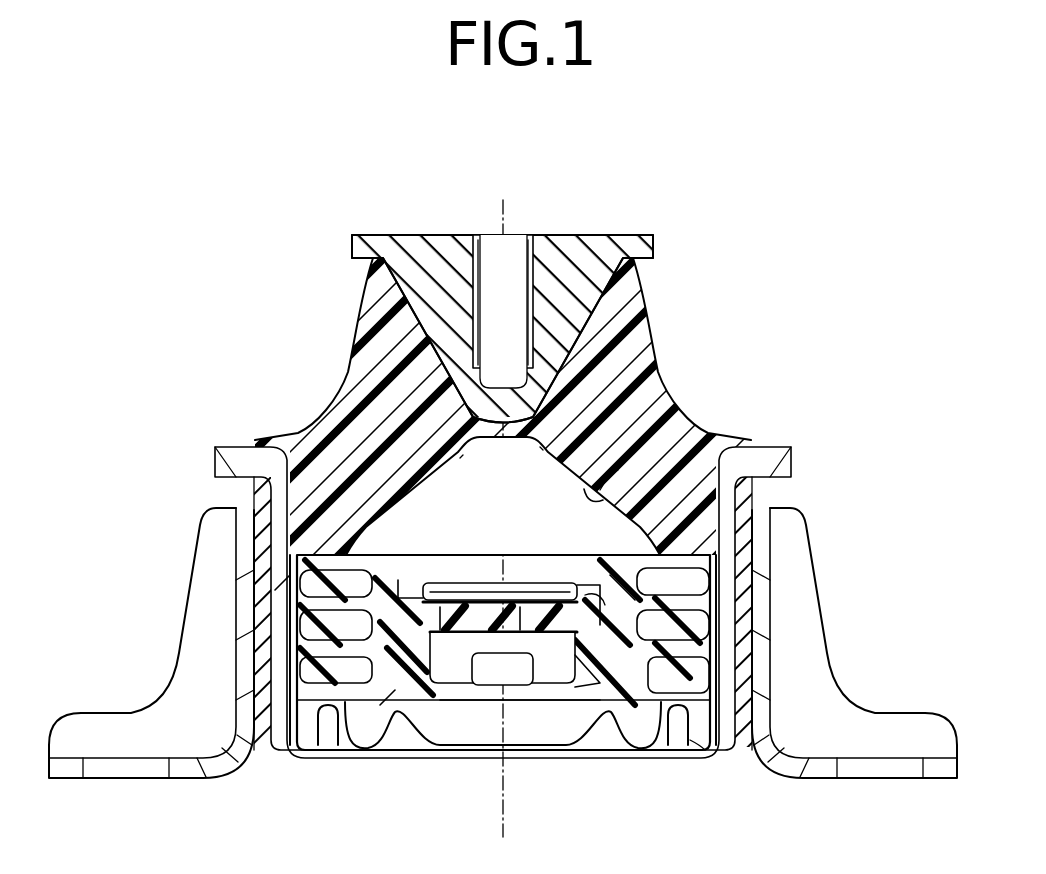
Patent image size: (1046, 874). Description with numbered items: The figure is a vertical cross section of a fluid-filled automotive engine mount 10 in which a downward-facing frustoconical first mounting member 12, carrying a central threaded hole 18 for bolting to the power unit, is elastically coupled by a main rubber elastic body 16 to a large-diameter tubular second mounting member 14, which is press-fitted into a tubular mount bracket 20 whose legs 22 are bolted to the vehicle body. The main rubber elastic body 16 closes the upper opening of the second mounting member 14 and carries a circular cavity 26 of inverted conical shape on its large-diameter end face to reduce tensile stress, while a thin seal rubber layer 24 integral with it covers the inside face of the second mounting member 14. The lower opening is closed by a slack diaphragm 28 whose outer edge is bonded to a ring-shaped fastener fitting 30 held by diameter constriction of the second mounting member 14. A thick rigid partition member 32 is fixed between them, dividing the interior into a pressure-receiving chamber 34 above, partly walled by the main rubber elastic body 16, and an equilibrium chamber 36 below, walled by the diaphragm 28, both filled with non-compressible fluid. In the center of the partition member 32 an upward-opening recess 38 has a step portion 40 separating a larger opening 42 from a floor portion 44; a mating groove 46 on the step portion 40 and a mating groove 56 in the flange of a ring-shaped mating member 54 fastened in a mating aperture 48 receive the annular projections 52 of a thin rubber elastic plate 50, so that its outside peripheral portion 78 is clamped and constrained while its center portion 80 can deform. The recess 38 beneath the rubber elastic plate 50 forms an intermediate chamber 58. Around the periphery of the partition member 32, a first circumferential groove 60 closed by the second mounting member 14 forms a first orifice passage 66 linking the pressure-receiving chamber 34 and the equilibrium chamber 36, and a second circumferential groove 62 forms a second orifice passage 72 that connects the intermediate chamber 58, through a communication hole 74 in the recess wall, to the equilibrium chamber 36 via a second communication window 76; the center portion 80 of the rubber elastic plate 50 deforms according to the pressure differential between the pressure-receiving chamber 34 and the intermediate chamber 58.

The engine mount 10 is at (338, 202).
The first mounting member 12 is at (583, 265).
The second mounting member 14 is at (720, 693).
The main rubber elastic body 16 is at (377, 415).
The threaded hole 18 is at (478, 290).
The mount bracket 20 is at (260, 533).
The legs 22 is at (188, 765).
The seal rubber layer 24 is at (715, 580).
The circular cavity 26 is at (543, 475).
The diaphragm 28 is at (605, 738).
The fastener fitting 30 is at (705, 750).
The partition member 32 is at (290, 597).
The pressure-receiving chamber 34 is at (560, 463).
The equilibrium chamber 36 is at (333, 740).
The recess 38 is at (437, 604).
The step portion 40 is at (455, 700).
The opening 42 is at (563, 600).
The floor portion 44 is at (490, 688).
The mating groove 46 is at (388, 700).
The mating aperture 48 is at (405, 590).
The rubber elastic plate 50 is at (490, 585).
The annular projections 52 is at (430, 600).
The mating member 54 is at (595, 620).
The mating groove 56 is at (620, 600).
The intermediate chamber 58 is at (570, 688).
The first circumferential groove 60 is at (700, 630).
The second circumferential groove 62 is at (313, 662).
The first orifice passage 66 is at (355, 587).
The second orifice passage 72 is at (340, 675).
The communication hole 74 is at (525, 700).
The second communication window 76 is at (662, 740).
The outside peripheral portion 78 is at (450, 630).
The center portion 80 is at (520, 620).